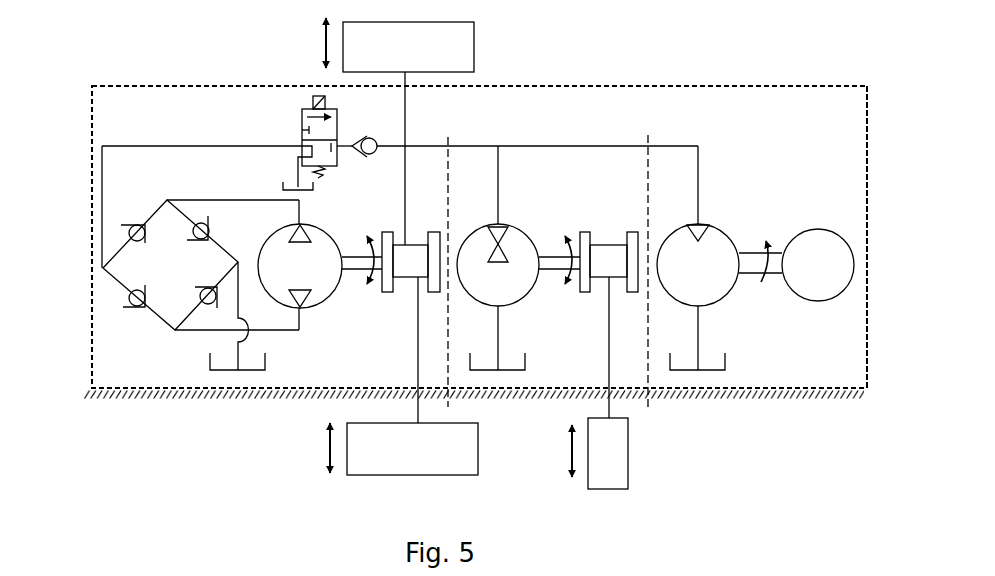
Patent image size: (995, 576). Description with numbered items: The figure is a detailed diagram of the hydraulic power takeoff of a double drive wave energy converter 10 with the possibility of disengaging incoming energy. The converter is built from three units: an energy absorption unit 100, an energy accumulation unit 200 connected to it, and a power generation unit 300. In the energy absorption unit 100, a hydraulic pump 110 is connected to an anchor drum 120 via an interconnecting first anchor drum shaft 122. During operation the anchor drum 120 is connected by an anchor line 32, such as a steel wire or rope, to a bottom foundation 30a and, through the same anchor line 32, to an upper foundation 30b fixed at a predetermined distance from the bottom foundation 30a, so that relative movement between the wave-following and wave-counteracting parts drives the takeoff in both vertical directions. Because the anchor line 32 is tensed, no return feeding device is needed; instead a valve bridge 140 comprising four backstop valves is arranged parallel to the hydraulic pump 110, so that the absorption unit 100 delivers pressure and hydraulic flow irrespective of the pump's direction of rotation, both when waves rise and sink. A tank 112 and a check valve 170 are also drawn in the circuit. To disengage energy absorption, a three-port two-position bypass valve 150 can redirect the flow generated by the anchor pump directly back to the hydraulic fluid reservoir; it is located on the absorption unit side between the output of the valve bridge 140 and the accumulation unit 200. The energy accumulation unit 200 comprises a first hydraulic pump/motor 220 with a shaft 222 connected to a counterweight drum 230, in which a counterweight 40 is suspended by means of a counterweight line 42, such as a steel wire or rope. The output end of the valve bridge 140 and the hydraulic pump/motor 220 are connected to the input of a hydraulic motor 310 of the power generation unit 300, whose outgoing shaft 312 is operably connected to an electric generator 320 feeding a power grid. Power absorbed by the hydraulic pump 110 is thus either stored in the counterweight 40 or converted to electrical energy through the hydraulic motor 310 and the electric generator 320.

The wave energy converter 10 is at (72, 103).
The bottom foundation 30a is at (420, 472).
The upper foundation 30b is at (475, 43).
The anchor line 32 is at (418, 370).
The counterweight 40 is at (630, 462).
The counterweight line 42 is at (610, 408).
The energy absorption unit 100 is at (220, 417).
The hydraulic pump 110 is at (325, 287).
The tank 112 is at (210, 364).
The anchor drum 120 is at (402, 245).
The first anchor drum shaft 122 is at (353, 257).
The valve bridge 140 is at (132, 280).
The 3/2-way valve 150 is at (302, 127).
The check valve 170 is at (380, 138).
The energy accumulation unit 200 is at (530, 418).
The first hydraulic pump/motor 220 is at (512, 287).
The shaft 222 is at (548, 260).
The counterweight drum 230 is at (602, 245).
The power generation unit 300 is at (777, 415).
The hydraulic motor 310 is at (720, 283).
The outgoing shaft 312 is at (753, 258).
The electric generator 320 is at (813, 240).